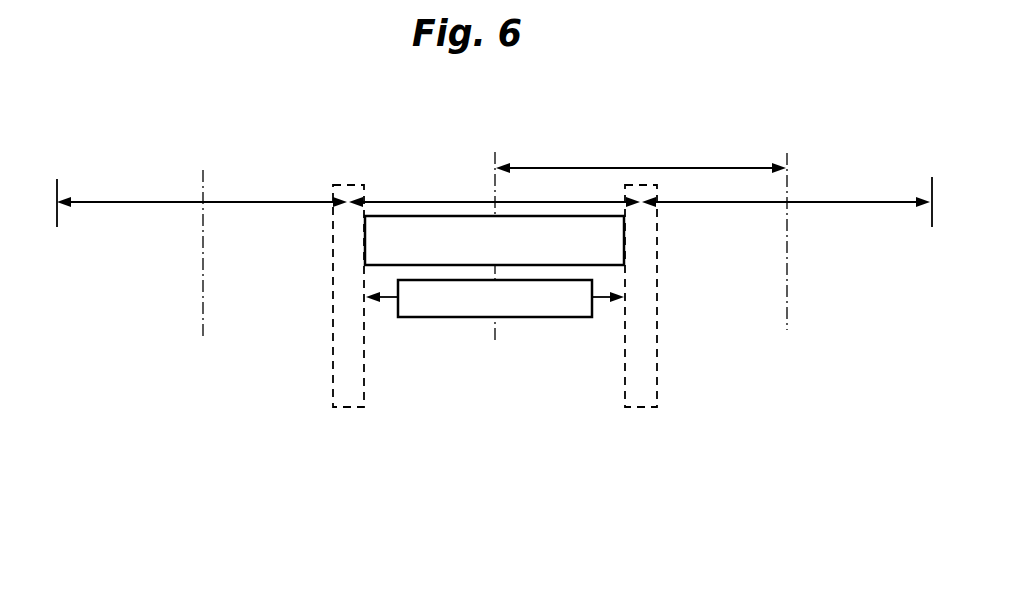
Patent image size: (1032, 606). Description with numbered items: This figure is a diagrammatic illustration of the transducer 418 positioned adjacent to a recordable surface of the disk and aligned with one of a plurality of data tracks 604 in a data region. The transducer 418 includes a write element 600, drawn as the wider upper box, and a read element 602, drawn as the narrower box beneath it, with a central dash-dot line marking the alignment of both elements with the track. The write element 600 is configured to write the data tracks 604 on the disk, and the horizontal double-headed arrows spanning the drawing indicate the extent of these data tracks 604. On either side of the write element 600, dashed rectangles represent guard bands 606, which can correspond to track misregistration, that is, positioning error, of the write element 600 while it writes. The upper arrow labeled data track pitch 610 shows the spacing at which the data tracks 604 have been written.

The transducer 418 is at (494, 345).
The write element 600 is at (494, 240).
The read element 602 is at (530, 316).
The data tracks 604 is at (240, 200).
The guard bands 606 is at (343, 408).
The data track pitch 610 is at (563, 165).